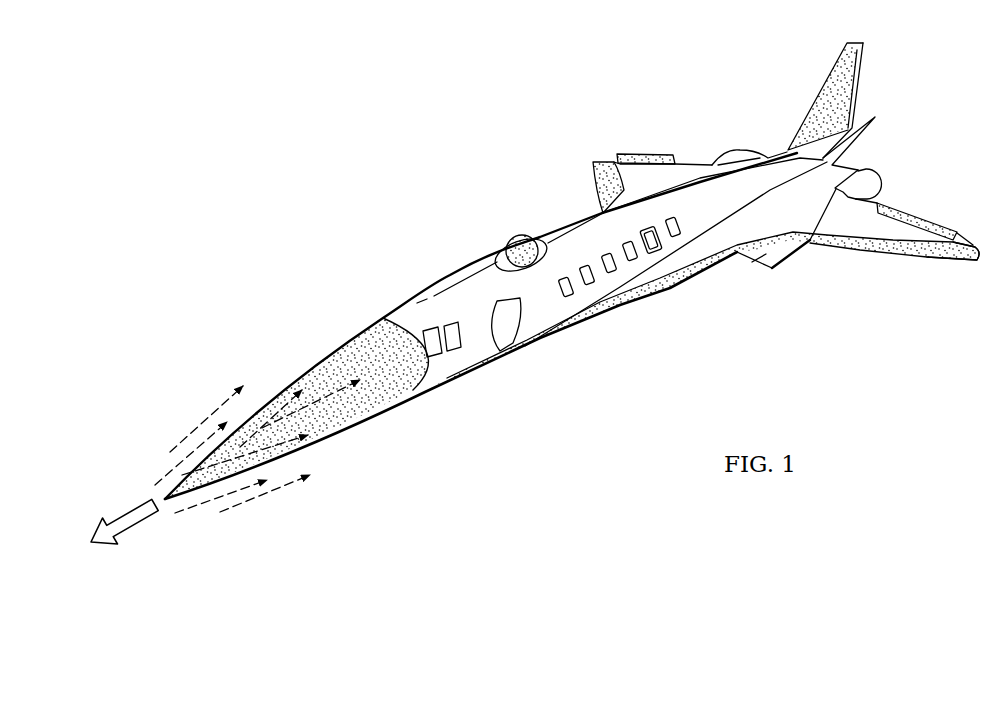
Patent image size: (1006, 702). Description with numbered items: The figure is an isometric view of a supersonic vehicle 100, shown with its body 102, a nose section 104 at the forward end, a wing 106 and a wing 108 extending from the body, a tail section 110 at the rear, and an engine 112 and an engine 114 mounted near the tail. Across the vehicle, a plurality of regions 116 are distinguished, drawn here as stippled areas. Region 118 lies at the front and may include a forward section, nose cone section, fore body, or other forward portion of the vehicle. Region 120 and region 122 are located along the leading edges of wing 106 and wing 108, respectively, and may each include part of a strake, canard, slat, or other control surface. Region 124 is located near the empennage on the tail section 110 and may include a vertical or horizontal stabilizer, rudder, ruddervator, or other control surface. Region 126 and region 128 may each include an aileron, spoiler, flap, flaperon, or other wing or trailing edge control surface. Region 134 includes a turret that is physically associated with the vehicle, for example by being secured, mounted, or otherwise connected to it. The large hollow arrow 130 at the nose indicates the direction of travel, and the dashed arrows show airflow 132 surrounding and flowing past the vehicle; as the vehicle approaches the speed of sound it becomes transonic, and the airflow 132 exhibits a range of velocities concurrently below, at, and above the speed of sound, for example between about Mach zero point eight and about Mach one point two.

The supersonic vehicle 100 is at (370, 203).
The body 102 is at (550, 228).
The nose section 104 is at (311, 365).
The wing 106 is at (602, 158).
The wing 108 is at (948, 258).
The tail section 110 is at (862, 83).
The engine 112 is at (733, 155).
The engine 114 is at (872, 175).
The plurality of regions 116 is at (698, 292).
The region 118 is at (350, 432).
The region 120 is at (594, 178).
The region 122 is at (737, 267).
The region 124 is at (828, 85).
The region 126 is at (648, 153).
The region 128 is at (923, 212).
The flight direction arrow 130 is at (143, 520).
The airflow 132 is at (271, 505).
The region 134 is at (515, 238).